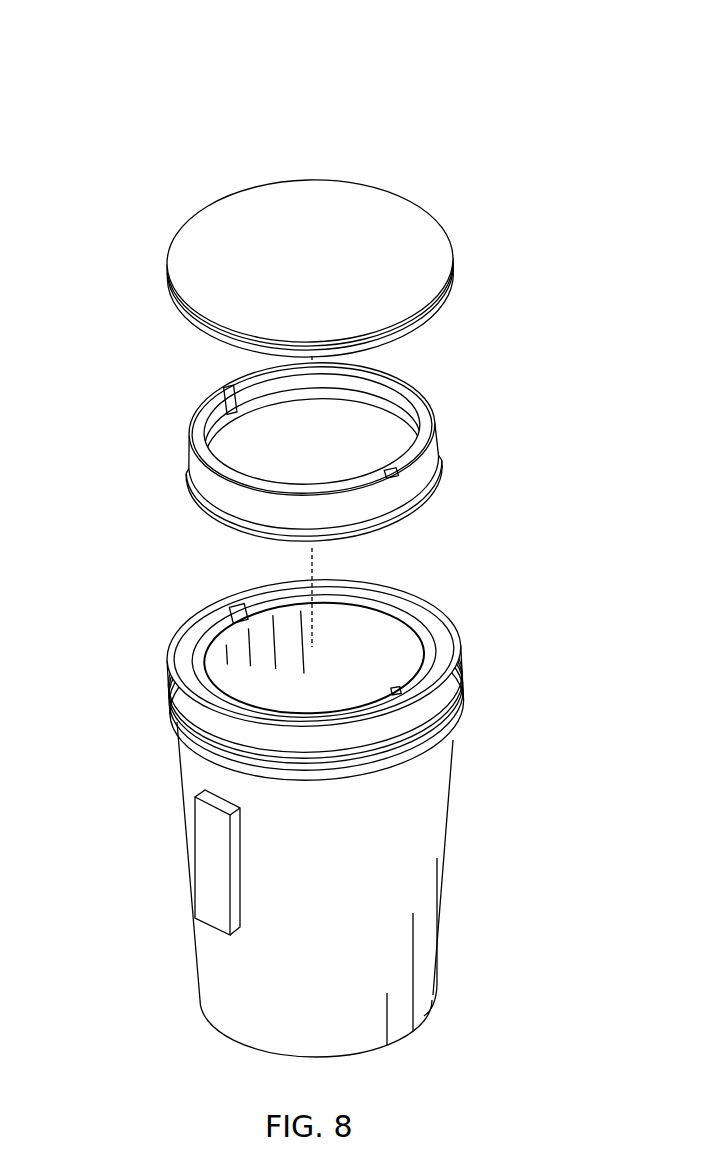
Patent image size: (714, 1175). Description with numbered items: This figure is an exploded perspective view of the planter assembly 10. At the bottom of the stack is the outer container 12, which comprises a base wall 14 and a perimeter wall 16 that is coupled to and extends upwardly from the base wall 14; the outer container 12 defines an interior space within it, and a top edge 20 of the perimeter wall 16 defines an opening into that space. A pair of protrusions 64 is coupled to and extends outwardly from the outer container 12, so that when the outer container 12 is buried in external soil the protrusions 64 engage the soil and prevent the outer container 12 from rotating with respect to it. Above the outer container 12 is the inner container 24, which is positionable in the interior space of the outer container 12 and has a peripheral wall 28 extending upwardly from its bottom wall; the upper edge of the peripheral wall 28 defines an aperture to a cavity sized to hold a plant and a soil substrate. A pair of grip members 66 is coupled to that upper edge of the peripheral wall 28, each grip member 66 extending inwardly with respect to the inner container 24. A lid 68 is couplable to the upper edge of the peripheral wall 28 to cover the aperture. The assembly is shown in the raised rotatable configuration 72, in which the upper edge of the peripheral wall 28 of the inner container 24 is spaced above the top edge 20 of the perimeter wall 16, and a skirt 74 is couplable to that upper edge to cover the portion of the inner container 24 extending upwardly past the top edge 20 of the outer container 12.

The planter assembly 10 is at (439, 119).
The outer container 12 is at (348, 922).
The base wall 14 is at (397, 1043).
The perimeter wall 16 is at (425, 945).
The top edge 20 is at (348, 695).
The inner container 24 is at (388, 562).
The peripheral wall 28 is at (360, 627).
The protrusion 64 is at (223, 905).
The grip member 66 is at (242, 602).
The lid 68 is at (373, 242).
The raised rotatable configuration 72 is at (136, 893).
The skirt 74 is at (217, 700).